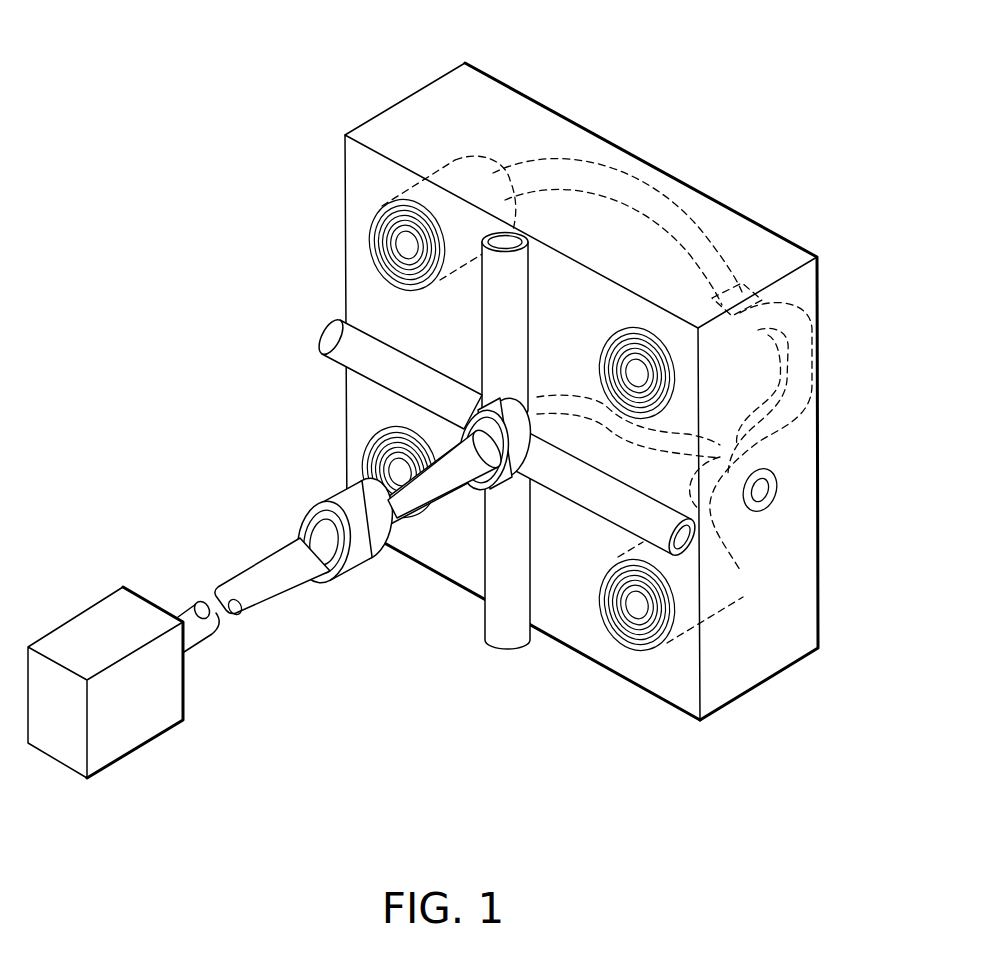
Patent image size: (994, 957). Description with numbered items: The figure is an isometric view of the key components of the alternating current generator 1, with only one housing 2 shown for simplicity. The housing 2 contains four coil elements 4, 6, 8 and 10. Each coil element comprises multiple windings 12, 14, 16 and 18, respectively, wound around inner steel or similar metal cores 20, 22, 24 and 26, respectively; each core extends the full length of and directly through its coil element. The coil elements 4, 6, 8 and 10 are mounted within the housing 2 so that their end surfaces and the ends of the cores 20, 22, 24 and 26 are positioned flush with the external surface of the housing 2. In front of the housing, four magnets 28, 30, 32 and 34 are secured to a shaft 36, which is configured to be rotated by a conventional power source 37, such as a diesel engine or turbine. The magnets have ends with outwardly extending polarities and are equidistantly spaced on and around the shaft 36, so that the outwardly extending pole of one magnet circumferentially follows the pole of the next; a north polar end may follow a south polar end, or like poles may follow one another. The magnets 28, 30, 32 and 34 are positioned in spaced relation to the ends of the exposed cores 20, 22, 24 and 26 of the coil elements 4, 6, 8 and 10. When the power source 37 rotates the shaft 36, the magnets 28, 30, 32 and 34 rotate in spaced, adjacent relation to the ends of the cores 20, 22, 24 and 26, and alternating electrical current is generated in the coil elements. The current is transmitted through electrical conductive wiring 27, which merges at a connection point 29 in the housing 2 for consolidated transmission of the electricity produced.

The alternating current generator 1 is at (655, 102).
The housing 2 is at (797, 588).
The coil element 4 is at (657, 640).
The coil element 6 is at (722, 297).
The coil element 8 is at (455, 155).
The coil element 10 is at (390, 442).
The windings 12 is at (667, 612).
The windings 14 is at (660, 376).
The windings 16 is at (402, 242).
The windings 18 is at (390, 428).
The core 20 is at (637, 607).
The core 22 is at (633, 370).
The core 24 is at (393, 240).
The core 26 is at (393, 468).
The electrical conductive wiring 27 is at (800, 313).
The magnet 28 is at (517, 607).
The connection point 29 is at (776, 490).
The magnet 30 is at (597, 492).
The magnet 32 is at (523, 253).
The magnet 34 is at (375, 340).
The shaft 36 is at (398, 515).
The power source 37 is at (150, 704).